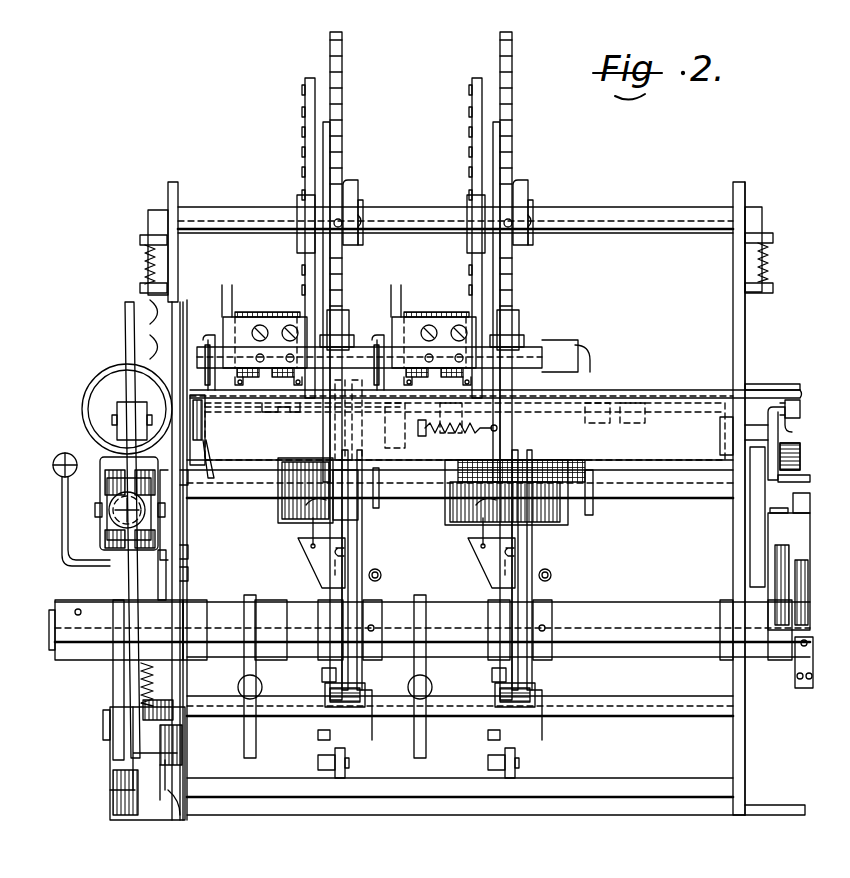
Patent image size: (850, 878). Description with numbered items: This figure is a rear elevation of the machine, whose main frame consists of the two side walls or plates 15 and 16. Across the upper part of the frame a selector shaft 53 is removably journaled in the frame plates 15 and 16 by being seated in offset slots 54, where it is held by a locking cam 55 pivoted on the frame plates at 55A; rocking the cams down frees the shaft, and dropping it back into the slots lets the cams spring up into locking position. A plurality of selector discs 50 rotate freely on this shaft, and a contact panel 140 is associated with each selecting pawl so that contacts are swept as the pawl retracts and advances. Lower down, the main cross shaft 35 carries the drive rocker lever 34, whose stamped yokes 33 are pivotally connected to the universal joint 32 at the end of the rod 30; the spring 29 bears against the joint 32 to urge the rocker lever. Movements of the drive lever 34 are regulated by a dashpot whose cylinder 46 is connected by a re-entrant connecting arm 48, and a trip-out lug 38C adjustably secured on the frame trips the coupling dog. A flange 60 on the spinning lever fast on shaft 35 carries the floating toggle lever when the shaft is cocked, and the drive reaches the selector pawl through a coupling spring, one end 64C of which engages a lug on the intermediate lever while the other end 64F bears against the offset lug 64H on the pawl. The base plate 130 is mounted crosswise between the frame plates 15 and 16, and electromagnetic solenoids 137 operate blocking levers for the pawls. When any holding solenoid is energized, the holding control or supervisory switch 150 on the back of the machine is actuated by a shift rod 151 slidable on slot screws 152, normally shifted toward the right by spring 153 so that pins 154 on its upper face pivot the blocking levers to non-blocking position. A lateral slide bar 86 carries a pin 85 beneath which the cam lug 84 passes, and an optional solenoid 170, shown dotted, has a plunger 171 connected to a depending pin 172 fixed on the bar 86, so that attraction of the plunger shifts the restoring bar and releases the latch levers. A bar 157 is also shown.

The side wall or plate 15 is at (735, 340).
The side wall or plate 16 is at (180, 270).
The spring 29 is at (110, 520).
The rod 30 is at (100, 508).
The universal joint 32 is at (110, 488).
The stamped yokes 33 is at (106, 543).
The drive rocker lever 34 is at (128, 622).
The main cross shaft 35 is at (232, 630).
The trip-out lug 38C is at (118, 797).
The cylinder 46 is at (98, 404).
The re-entrant connecting arm 48 is at (125, 333).
The selector disc 50 is at (343, 100).
The selector shaft 53 is at (232, 210).
The offset slots 54 is at (187, 189).
The locking cam 55 is at (167, 192).
The pivot of locking cam 55A is at (142, 262).
The flange 60 is at (362, 706).
The end of coupling spring 64C is at (346, 552).
The end of coupling spring 64F is at (306, 535).
The offset lug 64H is at (312, 566).
The cam lug 84 is at (785, 428).
The pin 85 is at (801, 408).
The lateral slide bar 86 is at (762, 384).
The base plate 130 is at (636, 387).
The electromagnetic solenoid 137 is at (262, 312).
The contact panel 140 is at (305, 132).
The holding control or supervisory switch 150 is at (216, 467).
The shift rod 151 is at (210, 410).
The slot screws 152 is at (306, 412).
The spring 153 is at (468, 432).
The pins 154 is at (350, 403).
The mounting bar 157 is at (393, 356).
The solenoid 170 is at (570, 438).
The plunger 171 is at (392, 455).
The depending pin 172 is at (435, 491).